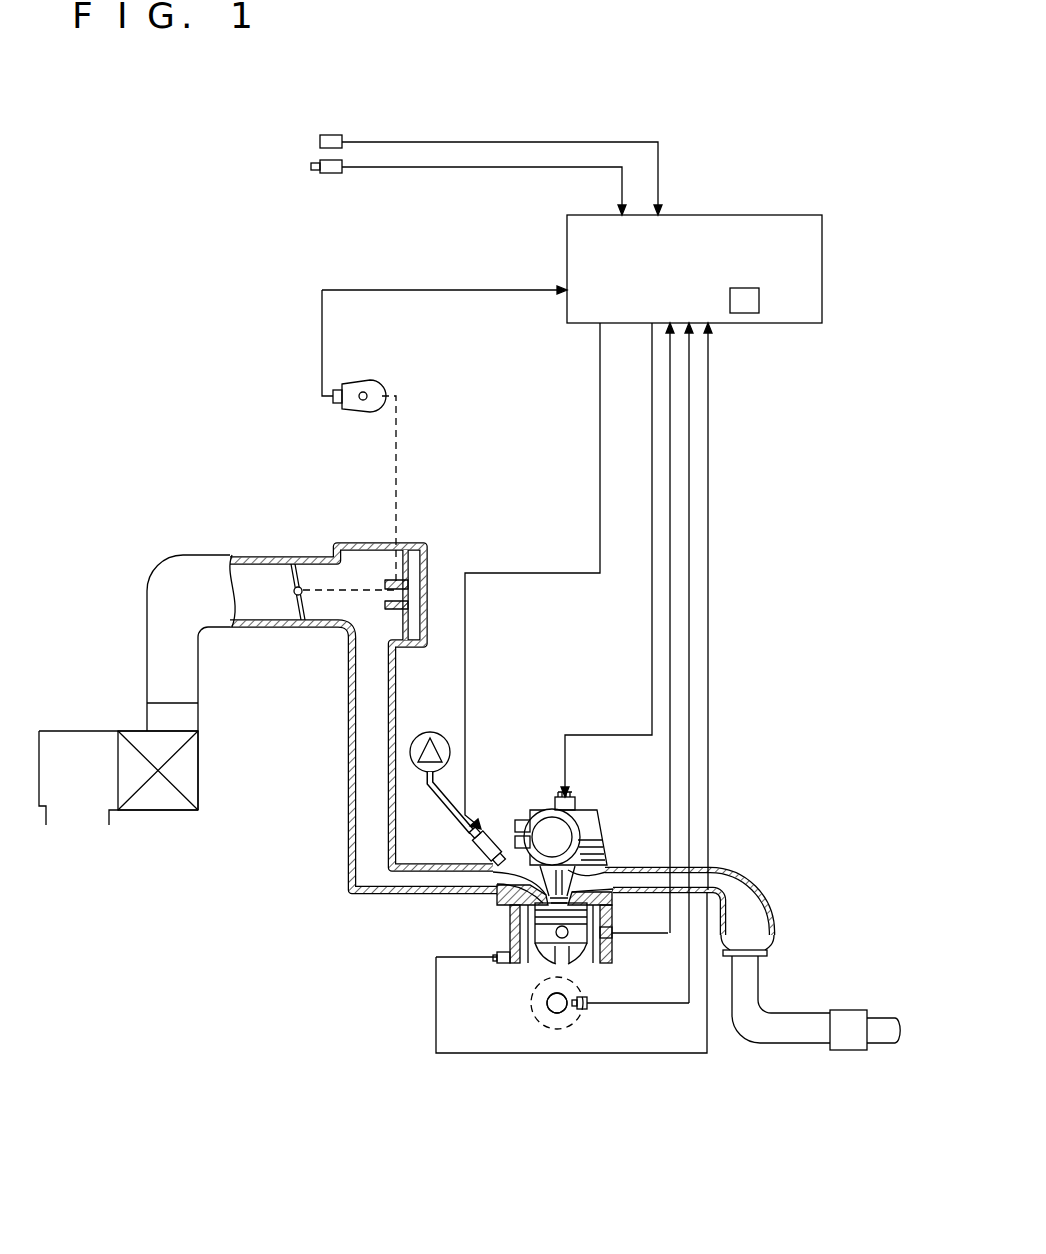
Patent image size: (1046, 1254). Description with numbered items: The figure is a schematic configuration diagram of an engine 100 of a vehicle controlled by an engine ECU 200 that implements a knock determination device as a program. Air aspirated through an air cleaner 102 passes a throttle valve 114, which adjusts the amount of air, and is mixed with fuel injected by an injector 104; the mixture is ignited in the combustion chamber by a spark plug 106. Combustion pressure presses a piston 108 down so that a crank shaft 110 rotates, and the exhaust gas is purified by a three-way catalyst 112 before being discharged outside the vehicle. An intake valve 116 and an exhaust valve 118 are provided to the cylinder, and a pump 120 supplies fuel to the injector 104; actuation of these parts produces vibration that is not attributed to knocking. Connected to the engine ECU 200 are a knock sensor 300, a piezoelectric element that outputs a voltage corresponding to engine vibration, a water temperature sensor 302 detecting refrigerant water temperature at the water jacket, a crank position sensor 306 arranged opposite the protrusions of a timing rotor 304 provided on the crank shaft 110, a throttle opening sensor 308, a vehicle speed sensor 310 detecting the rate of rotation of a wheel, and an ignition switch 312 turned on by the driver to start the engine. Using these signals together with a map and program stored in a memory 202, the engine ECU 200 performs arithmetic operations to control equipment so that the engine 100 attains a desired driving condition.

The engine 100 is at (476, 917).
The air cleaner 102 is at (157, 812).
The injector 104 is at (496, 838).
The spark plug 106 is at (575, 800).
The piston 108 is at (542, 960).
The crank shaft 110 is at (542, 1022).
The three-way catalyst 112 is at (747, 908).
The throttle valve 114 is at (289, 608).
The intake valve 116 is at (444, 868).
The exhaust valve 118 is at (617, 870).
The pump 120 is at (428, 732).
The engine ECU 200 is at (765, 215).
The memory 202 is at (750, 313).
The knock sensor 300 is at (500, 962).
The water temperature sensor 302 is at (610, 938).
The timing rotor 304 is at (567, 1012).
The crank position sensor 306 is at (590, 1008).
The throttle opening sensor 308 is at (372, 383).
The vehicle speed sensor 310 is at (336, 135).
The ignition switch 312 is at (335, 173).